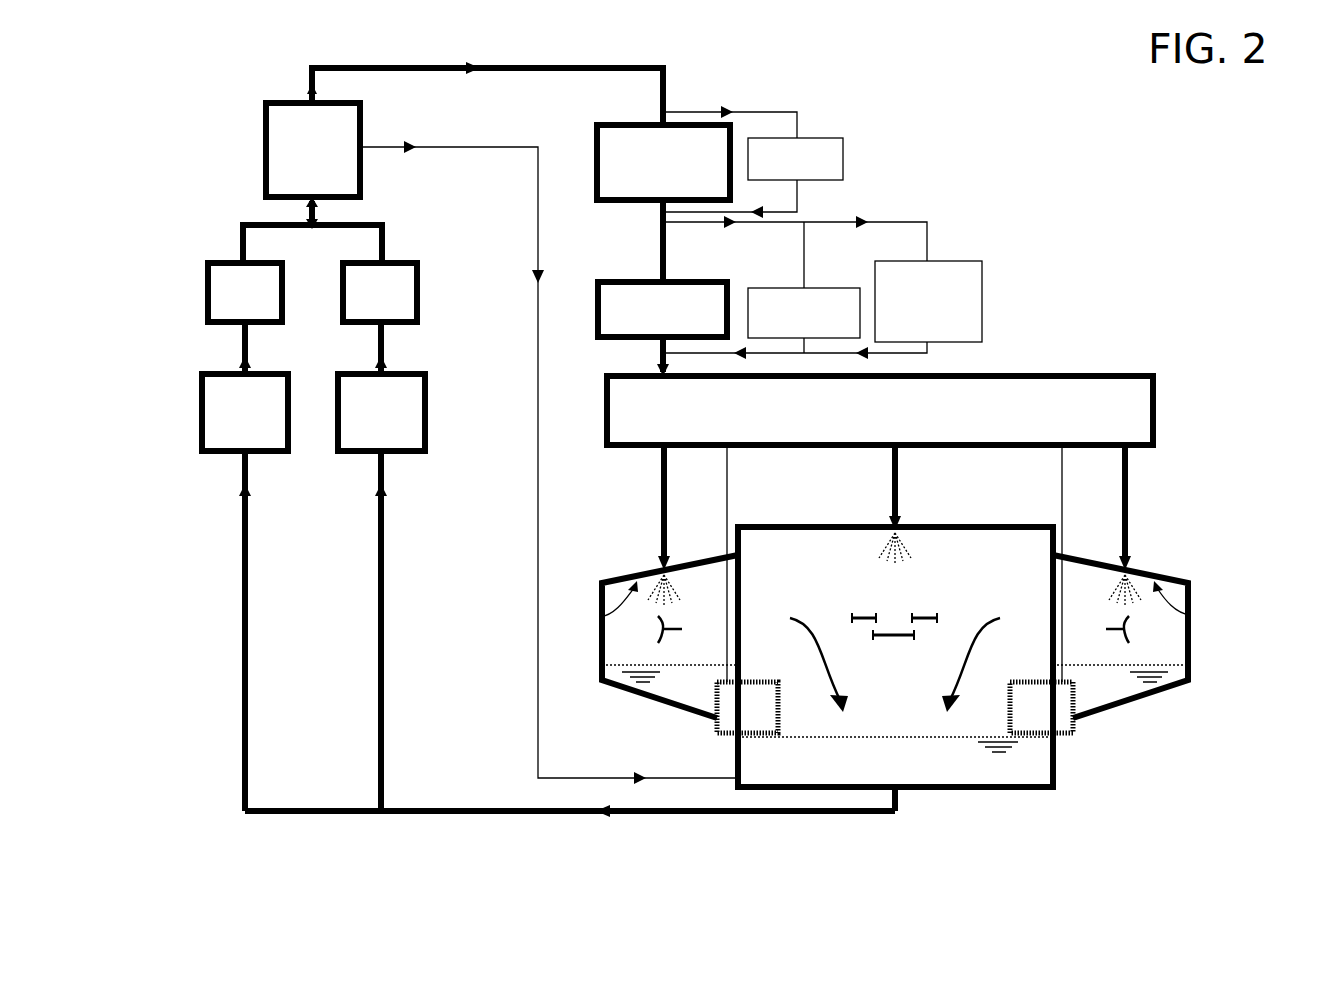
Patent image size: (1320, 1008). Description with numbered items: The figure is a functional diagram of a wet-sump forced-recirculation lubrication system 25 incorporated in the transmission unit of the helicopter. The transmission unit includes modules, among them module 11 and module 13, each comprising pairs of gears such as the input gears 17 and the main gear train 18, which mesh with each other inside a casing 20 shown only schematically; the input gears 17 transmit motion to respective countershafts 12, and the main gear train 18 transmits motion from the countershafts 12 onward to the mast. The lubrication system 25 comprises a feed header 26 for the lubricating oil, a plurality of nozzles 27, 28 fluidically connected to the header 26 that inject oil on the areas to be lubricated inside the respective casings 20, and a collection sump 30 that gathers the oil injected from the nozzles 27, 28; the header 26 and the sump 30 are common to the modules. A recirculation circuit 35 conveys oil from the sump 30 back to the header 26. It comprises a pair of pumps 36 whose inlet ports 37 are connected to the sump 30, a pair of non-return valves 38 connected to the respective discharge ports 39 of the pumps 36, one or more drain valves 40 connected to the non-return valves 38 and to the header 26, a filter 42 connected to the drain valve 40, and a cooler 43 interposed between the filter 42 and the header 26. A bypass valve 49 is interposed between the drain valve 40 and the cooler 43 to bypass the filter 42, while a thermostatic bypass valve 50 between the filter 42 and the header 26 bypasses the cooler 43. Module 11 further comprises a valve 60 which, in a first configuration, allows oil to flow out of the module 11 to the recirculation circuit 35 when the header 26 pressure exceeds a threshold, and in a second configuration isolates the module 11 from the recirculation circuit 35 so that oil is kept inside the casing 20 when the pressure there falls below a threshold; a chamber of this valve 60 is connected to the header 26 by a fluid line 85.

The module 11 is at (600, 558).
The countershaft 12 is at (675, 650).
The module 13 is at (988, 815).
The input gear 17 is at (708, 624).
The main gear train 18 is at (887, 652).
The casing 20 is at (605, 615).
The lubrication system 25 is at (940, 162).
The feed header 26 is at (1163, 362).
The nozzle 27 is at (670, 572).
The nozzle 28 is at (890, 535).
The collection sump 30 is at (912, 778).
The recirculation circuit 35 is at (467, 832).
The pump 36 is at (222, 412).
The inlet port 37 is at (378, 455).
The non-return valve 38 is at (222, 282).
The discharge port 39 is at (240, 365).
The drain valve 40 is at (290, 135).
The filter 42 is at (610, 138).
The cooler 43 is at (620, 288).
The bypass valve 49 is at (830, 147).
The thermostatic bypass valve 50 is at (816, 295).
The valve 60 is at (740, 708).
The fluid line 85 is at (729, 478).